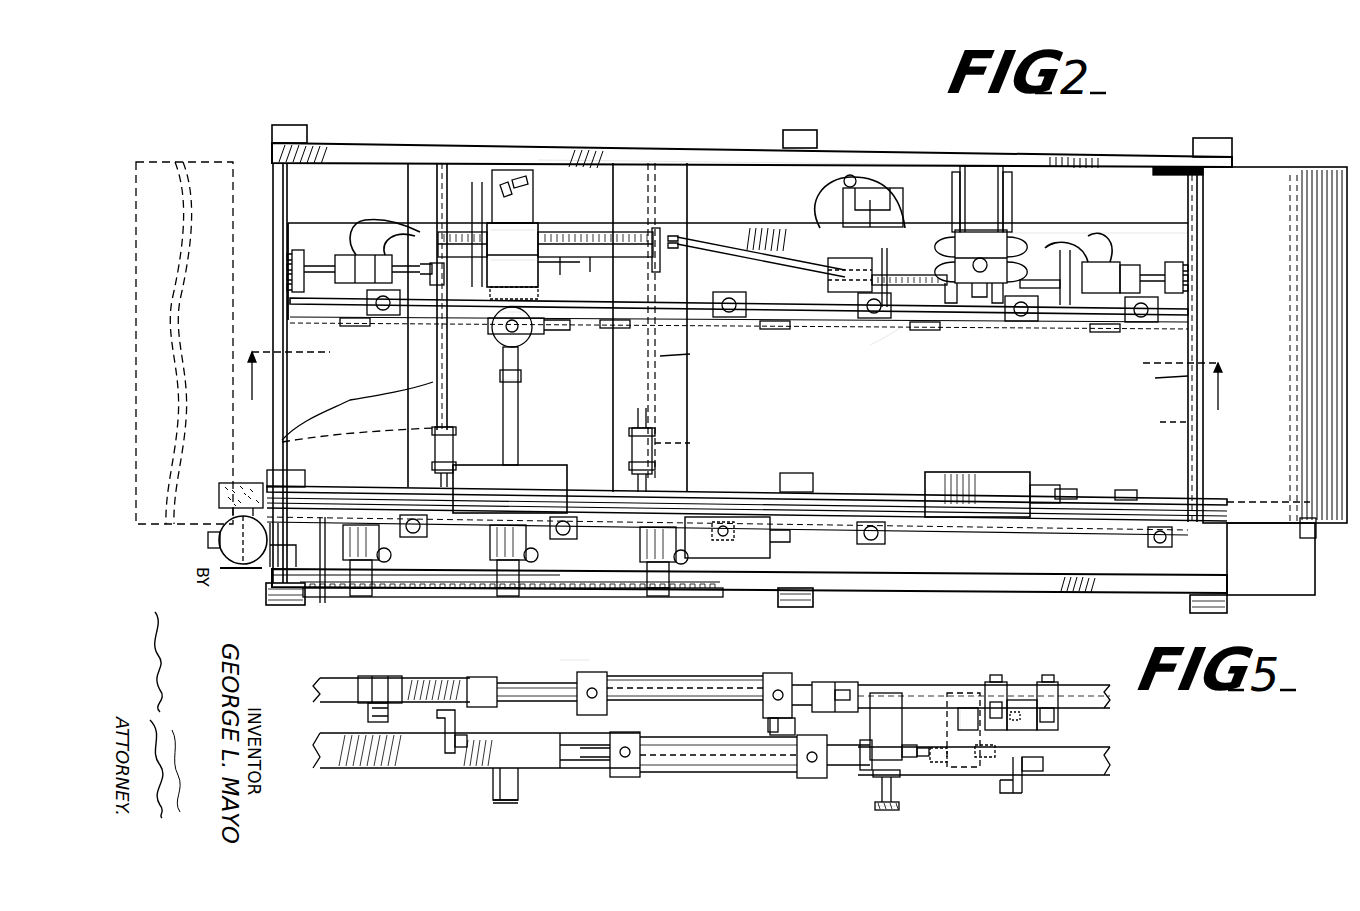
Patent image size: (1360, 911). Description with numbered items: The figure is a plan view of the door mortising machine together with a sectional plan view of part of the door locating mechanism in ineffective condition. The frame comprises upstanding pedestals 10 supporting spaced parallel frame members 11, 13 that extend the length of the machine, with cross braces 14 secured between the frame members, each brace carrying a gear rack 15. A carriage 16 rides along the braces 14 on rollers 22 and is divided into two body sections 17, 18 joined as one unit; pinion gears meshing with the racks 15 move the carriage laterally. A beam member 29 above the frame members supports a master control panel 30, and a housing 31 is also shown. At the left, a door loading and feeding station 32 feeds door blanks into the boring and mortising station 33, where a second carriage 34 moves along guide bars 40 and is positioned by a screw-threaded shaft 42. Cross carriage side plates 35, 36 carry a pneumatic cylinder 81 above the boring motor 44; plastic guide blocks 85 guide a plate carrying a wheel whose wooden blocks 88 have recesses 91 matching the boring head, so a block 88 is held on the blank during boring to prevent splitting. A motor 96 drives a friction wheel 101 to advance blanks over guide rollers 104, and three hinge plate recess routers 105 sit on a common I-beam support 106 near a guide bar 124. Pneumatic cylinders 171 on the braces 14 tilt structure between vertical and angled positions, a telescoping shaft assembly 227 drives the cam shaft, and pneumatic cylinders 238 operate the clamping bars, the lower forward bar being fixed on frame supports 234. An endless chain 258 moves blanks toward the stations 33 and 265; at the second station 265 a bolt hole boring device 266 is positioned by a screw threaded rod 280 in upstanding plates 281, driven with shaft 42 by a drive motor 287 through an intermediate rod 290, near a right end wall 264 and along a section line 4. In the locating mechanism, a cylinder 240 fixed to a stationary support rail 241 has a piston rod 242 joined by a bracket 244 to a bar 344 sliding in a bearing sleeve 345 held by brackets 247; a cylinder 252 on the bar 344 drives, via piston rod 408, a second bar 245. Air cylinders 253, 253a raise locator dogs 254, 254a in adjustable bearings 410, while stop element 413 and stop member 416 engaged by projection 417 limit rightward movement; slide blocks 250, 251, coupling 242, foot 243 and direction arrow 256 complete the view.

In FIG. 2, the section line 4- 4 is at (730, 392).
In FIG. 2, the upstanding pedestals 10 is at (307, 128).
In FIG. 2, the frame member 11 is at (930, 592).
In FIG. 2, the frame member 13 is at (888, 150).
In FIG. 2, the cross braces 14 is at (747, 439).
In FIG. 2, the gear rack 15 is at (735, 413).
In FIG. 2, the carriage 16 is at (1200, 263).
In FIG. 2, the body section 17 is at (320, 222).
In FIG. 2, the body section 18 is at (710, 225).
In FIG. 2, the rollers 22 is at (285, 272).
In FIG. 2, the beam member 29 is at (812, 528).
In FIG. 2, the master control panel 30 is at (728, 570).
In FIG. 2, the housing 31 is at (545, 465).
In FIG. 2, the door loading and feeding station 32 is at (215, 158).
In FIG. 2, the boring and mortising station 33 is at (540, 150).
In FIG. 2, the second carriage 34 is at (540, 218).
In FIG. 2, the cross carriage side plate 35 is at (512, 240).
In FIG. 2, the cross carriage side plate 36 is at (561, 270).
In FIG. 2, the guide bars 40 is at (605, 235).
In FIG. 2, the screw-threaded shaft 42 is at (597, 274).
In FIG. 2, the boring motor 44 is at (532, 340).
In FIG. 2, the pneumatic cylinder 81 is at (512, 271).
In FIG. 2, the vertical plastic guide blocks 85 is at (495, 320).
In FIG. 2, the wooden blocks 88 is at (500, 338).
In FIG. 2, the recesses 91 is at (503, 360).
In FIG. 2, the motor 96 is at (218, 543).
In FIG. 2, the friction wheel 101 is at (243, 483).
In FIG. 2, the guide rollers 104 is at (382, 313).
In FIG. 2, the hinge plate recess routers 105 is at (390, 550).
In FIG. 2, the I-beam support 106 is at (558, 590).
In FIG. 2, the guide bar 124 is at (458, 593).
In FIG. 2, the pneumatic cylinders 171 is at (453, 435).
In FIG. 2, the telescoping shaft assembly 227 is at (520, 380).
In FIG. 2, the pneumatic cylinders 238 is at (362, 258).
In FIG. 2, the endless chain 258 is at (1125, 492).
In FIG. 2, the right end wall 264 is at (1222, 195).
In FIG. 2, the second station 265 is at (1043, 200).
In FIG. 2, the bolt hole boring device 266 is at (960, 235).
In FIG. 2, the screw threaded rod 280 is at (910, 322).
In FIG. 2, the upstanding plates 281 is at (862, 255).
In FIG. 2, the drive motor 287 is at (1097, 325).
In FIG. 2, the intermediate rod 290 is at (766, 258).
In FIG. 5, the frame supports 234 is at (900, 805).
In FIG. 5, the cylinder 240 is at (652, 778).
In FIG. 5, the stationary support rail 241 is at (413, 770).
In FIG. 5, the piston rod 242 is at (845, 768).
In FIG. 5, the support foot 243 is at (887, 810).
In FIG. 5, the bracket 244 is at (890, 700).
In FIG. 5, the second bar 245 is at (446, 680).
In FIG. 5, the brackets 247 is at (790, 728).
In FIG. 5, the clamp 250 is at (842, 685).
In FIG. 5, the slide block 251 is at (790, 690).
In FIG. 5, the cylinder 252 is at (735, 690).
In FIG. 5, the air cylinder 253 is at (975, 732).
In FIG. 5, the air cylinder 253a is at (1020, 707).
In FIG. 5, the locator dog 254 is at (1030, 750).
In FIG. 5, the locator dog 254a is at (1050, 722).
In FIG. 5, the direction arrow 256 is at (553, 660).
In FIG. 5, the bar 344 is at (1112, 698).
In FIG. 5, the bearing sleeve 345 is at (812, 778).
In FIG. 5, the piston rod 408 is at (505, 690).
In FIG. 5, the bearings 410 is at (1055, 695).
In FIG. 5, the stop element 413 is at (1025, 785).
In FIG. 5, the stop member 416 is at (458, 732).
In FIG. 5, the projection 417 is at (392, 685).